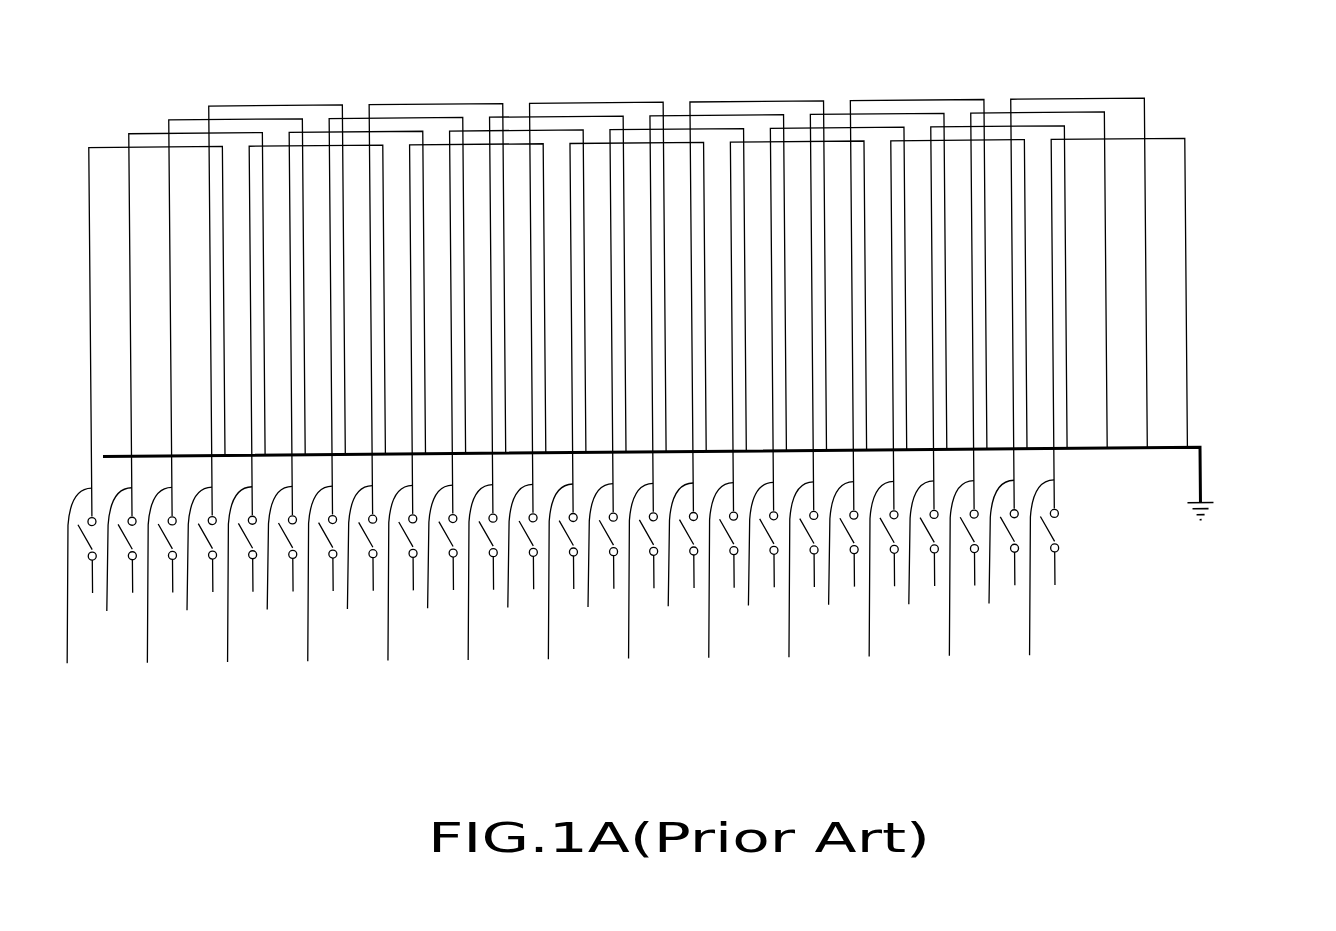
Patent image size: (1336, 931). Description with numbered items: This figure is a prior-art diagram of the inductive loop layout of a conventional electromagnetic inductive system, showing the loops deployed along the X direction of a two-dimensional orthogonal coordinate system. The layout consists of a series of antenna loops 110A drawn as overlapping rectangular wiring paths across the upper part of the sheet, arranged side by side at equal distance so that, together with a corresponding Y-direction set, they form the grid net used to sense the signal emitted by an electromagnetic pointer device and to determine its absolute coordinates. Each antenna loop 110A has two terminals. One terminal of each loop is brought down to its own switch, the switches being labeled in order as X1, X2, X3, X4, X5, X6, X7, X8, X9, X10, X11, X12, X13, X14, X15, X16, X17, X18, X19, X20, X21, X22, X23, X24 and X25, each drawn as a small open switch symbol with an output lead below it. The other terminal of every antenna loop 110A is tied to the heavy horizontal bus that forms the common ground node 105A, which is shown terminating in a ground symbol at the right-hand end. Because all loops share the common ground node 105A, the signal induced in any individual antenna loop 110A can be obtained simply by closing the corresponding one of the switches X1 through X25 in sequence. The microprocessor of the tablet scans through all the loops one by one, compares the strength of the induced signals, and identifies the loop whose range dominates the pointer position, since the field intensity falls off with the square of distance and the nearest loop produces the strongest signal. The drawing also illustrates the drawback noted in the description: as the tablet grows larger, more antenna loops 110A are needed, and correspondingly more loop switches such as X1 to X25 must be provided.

The antenna loop 110A is at (283, 106).
The common ground node 105A is at (1202, 465).
The switch X1 is at (75, 601).
The switch X2 is at (115, 572).
The switch X3 is at (155, 600).
The switch X4 is at (195, 571).
The switch X5 is at (235, 600).
The switch X6 is at (275, 570).
The switch X7 is at (315, 599).
The switch X8 is at (355, 570).
The switch X9 is at (395, 598).
The switch X10 is at (433, 569).
The switch X11 is at (473, 598).
The switch X12 is at (513, 568).
The switch X13 is at (553, 597).
The switch X14 is at (593, 568).
The switch X15 is at (634, 596).
The switch X16 is at (674, 567).
The switch X17 is at (714, 596).
The switch X18 is at (754, 566).
The switch X19 is at (794, 595).
The switch X20 is at (834, 566).
The switch X21 is at (874, 594).
The switch X22 is at (914, 565).
The switch X23 is at (954, 594).
The switch X24 is at (994, 564).
The switch X25 is at (1035, 593).